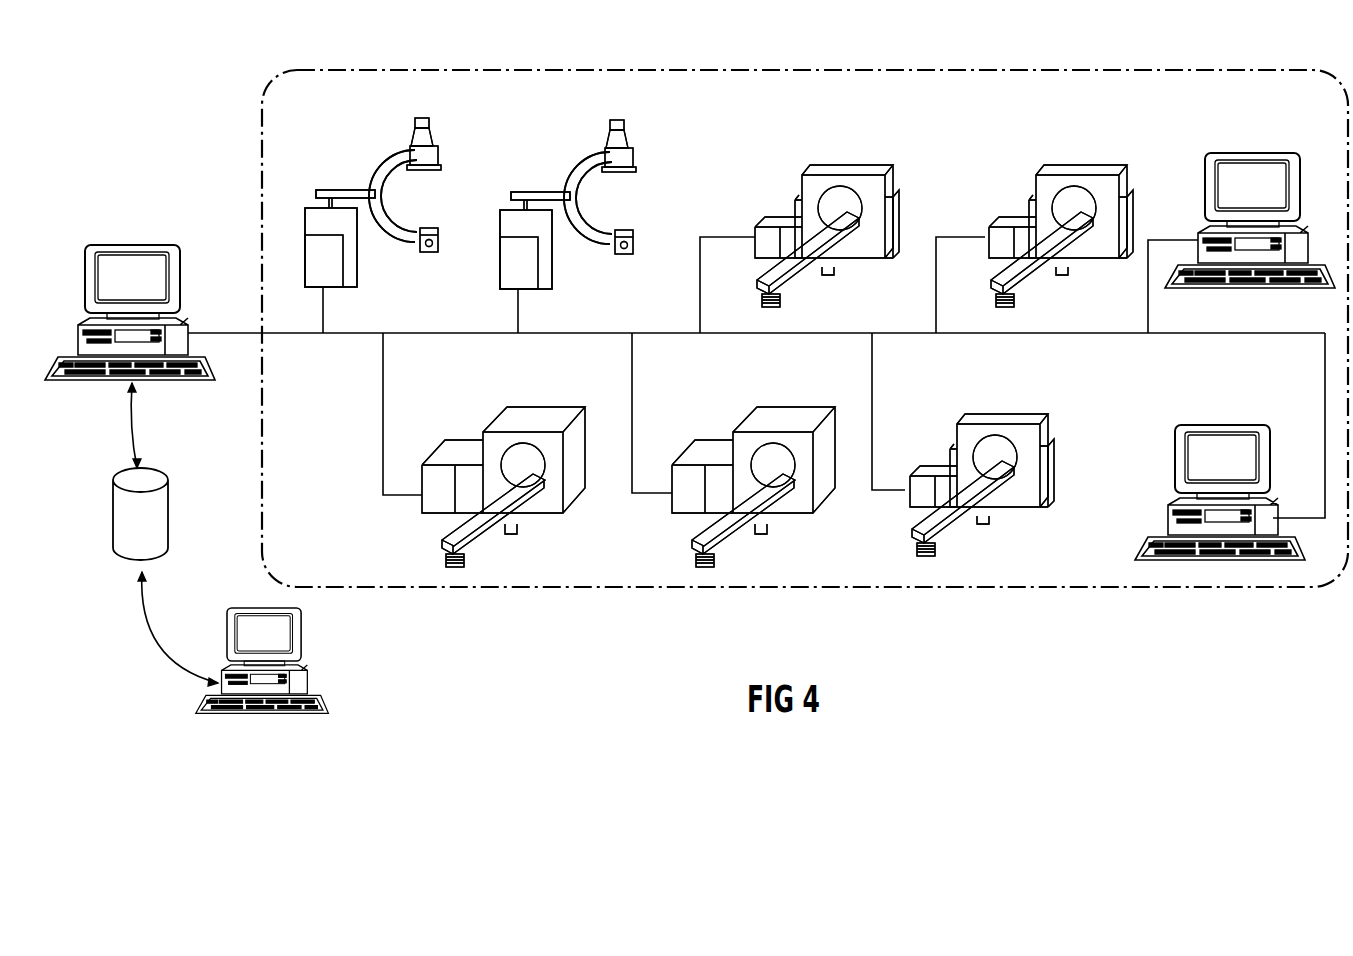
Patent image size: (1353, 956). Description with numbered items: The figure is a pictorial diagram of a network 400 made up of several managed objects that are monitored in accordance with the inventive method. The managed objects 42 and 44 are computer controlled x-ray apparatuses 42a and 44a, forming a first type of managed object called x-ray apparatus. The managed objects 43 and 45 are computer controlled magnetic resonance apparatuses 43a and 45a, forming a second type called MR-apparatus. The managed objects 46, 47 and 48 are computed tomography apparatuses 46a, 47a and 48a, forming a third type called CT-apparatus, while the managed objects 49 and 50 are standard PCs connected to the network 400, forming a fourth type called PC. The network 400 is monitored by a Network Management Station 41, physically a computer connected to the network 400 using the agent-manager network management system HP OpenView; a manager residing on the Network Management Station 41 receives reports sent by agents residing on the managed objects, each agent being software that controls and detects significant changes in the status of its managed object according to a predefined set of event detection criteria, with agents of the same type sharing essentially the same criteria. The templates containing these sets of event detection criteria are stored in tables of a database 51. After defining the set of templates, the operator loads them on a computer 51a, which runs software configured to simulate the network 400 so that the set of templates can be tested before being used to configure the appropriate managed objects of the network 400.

The network 400 is at (878, 72).
The Network Management Station 41 is at (80, 322).
The managed object 42 is at (313, 243).
The computer controlled x-ray apparatus 42a is at (358, 243).
The managed object 43 is at (437, 508).
The computer controlled magnetic resonance apparatus 43a is at (548, 490).
The managed object 44 is at (505, 253).
The computer controlled x-ray apparatus 44a is at (553, 245).
The managed object 45 is at (680, 508).
The computer controlled magnetic resonance apparatus 45a is at (800, 490).
The managed object 46 is at (763, 253).
The computed tomography apparatus 46a is at (872, 234).
The managed object 47 is at (916, 498).
The computed tomography apparatus 47a is at (1020, 485).
The managed object 48 is at (995, 253).
The computed tomography apparatus 48a is at (1105, 234).
The managed object 49 is at (1308, 243).
The managed object 50 is at (1165, 517).
The database 51 is at (155, 507).
The computer 51a is at (308, 688).